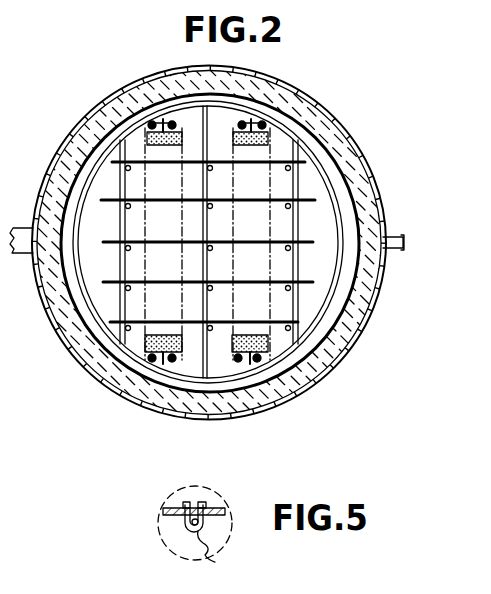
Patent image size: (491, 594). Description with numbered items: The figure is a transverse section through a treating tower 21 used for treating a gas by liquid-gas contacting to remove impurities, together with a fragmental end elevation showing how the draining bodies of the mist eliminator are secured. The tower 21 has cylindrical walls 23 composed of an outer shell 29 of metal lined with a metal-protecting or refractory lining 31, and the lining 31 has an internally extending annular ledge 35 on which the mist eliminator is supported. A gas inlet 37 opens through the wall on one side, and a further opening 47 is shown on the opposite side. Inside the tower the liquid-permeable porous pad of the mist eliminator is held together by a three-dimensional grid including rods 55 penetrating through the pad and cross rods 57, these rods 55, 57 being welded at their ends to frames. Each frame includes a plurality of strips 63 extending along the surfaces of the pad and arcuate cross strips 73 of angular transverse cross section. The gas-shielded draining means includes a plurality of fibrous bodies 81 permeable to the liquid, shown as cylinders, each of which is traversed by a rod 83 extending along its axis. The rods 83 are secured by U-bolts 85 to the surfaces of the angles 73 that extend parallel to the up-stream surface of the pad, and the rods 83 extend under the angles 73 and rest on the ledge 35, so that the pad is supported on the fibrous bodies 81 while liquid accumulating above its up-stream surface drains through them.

In FIG. 2, the treating tower 21 is at (122, 86).
In FIG. 2, the cylindrical walls 23 is at (386, 141).
In FIG. 2, the outer shell 29 is at (346, 368).
In FIG. 2, the lining 31 is at (352, 318).
In FIG. 2, the annular ledge 35 is at (78, 207).
In FIG. 2, the inlet 37 is at (27, 237).
In FIG. 2, the outlet nozzle 47 is at (396, 240).
In FIG. 2, the rods 55 is at (290, 208).
In FIG. 2, the cross rods 57 is at (283, 247).
In FIG. 2, the strips 63 is at (203, 225).
In FIG. 2, the arcuate cross strips 73 is at (230, 357).
In FIG. 5, the arcuate cross strips 73 is at (163, 506).
In FIG. 2, the fibrous bodies 81 is at (162, 334).
In FIG. 5, the fibrous bodies 81 is at (227, 533).
In FIG. 2, the rod 83 is at (240, 123).
In FIG. 5, the rod 83 is at (219, 555).
In FIG. 2, the U-bolts 85 is at (230, 366).
In FIG. 5, the U-bolts 85 is at (183, 525).